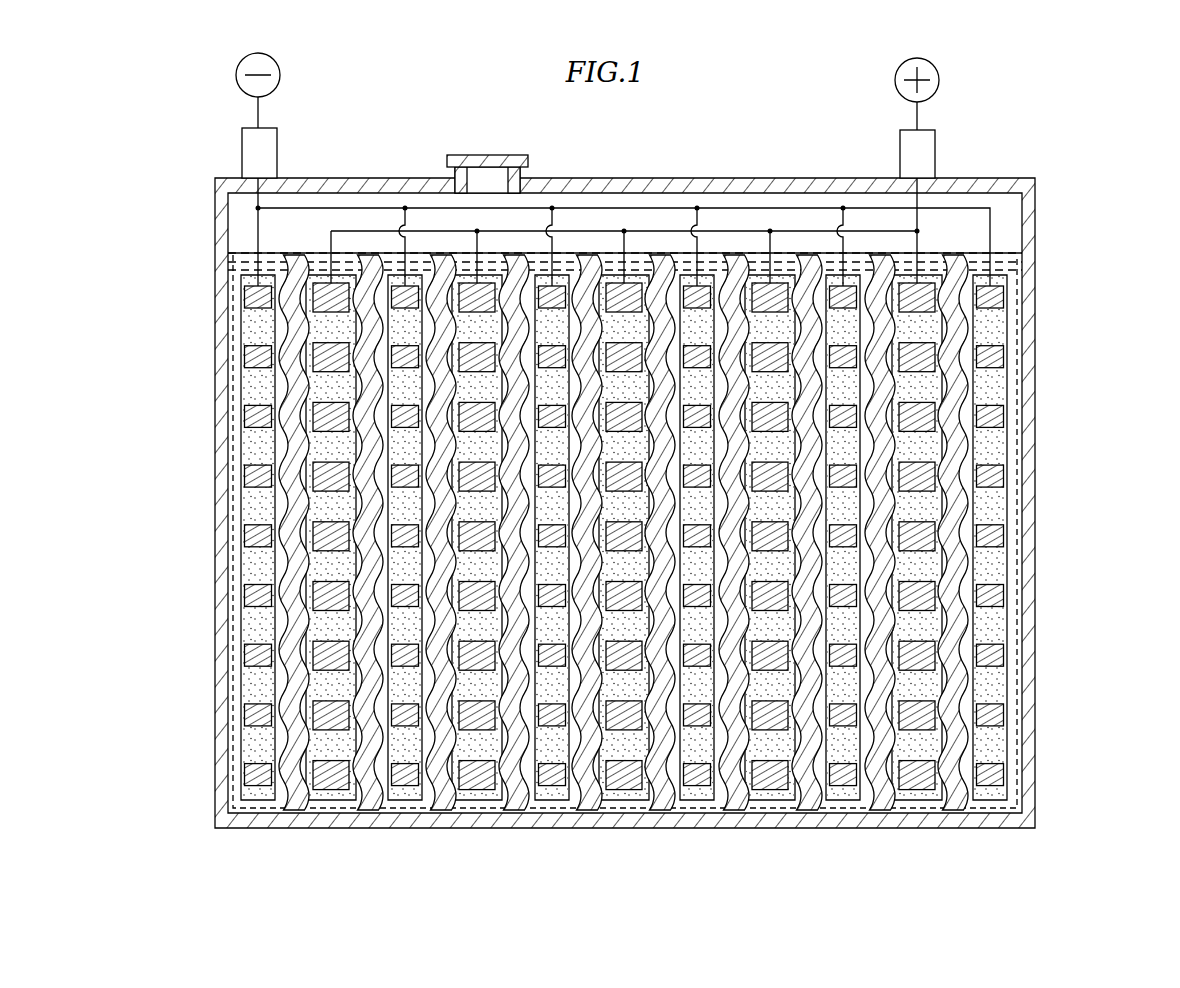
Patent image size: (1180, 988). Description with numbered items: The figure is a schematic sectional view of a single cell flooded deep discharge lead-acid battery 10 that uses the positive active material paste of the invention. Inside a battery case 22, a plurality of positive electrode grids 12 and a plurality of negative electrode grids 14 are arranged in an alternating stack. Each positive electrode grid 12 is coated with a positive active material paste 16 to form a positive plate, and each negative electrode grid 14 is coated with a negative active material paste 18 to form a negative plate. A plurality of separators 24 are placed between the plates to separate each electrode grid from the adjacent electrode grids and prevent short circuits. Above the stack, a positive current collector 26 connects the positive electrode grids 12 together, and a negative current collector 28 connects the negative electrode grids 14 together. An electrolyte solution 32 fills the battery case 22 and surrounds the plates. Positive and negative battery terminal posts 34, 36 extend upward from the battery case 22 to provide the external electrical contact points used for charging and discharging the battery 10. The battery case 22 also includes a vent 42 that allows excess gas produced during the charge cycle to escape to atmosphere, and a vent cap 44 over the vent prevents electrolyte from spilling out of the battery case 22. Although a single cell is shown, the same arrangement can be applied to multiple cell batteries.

The flooded deep discharge lead-acid battery 10 is at (1061, 124).
The positive electrode grid 12 is at (925, 365).
The negative electrode grid 14 is at (257, 410).
The positive active material paste 16 is at (330, 620).
The negative active material paste 18 is at (256, 562).
The battery case 22 is at (1035, 730).
The separator 24 is at (293, 800).
The positive current collector 26 is at (357, 232).
The negative current collector 28 is at (993, 220).
The electrolyte solution 32 is at (1003, 264).
The positive battery terminal post 34 is at (912, 157).
The negative battery terminal post 36 is at (250, 148).
The vent 42 is at (453, 178).
The vent cap 44 is at (450, 157).